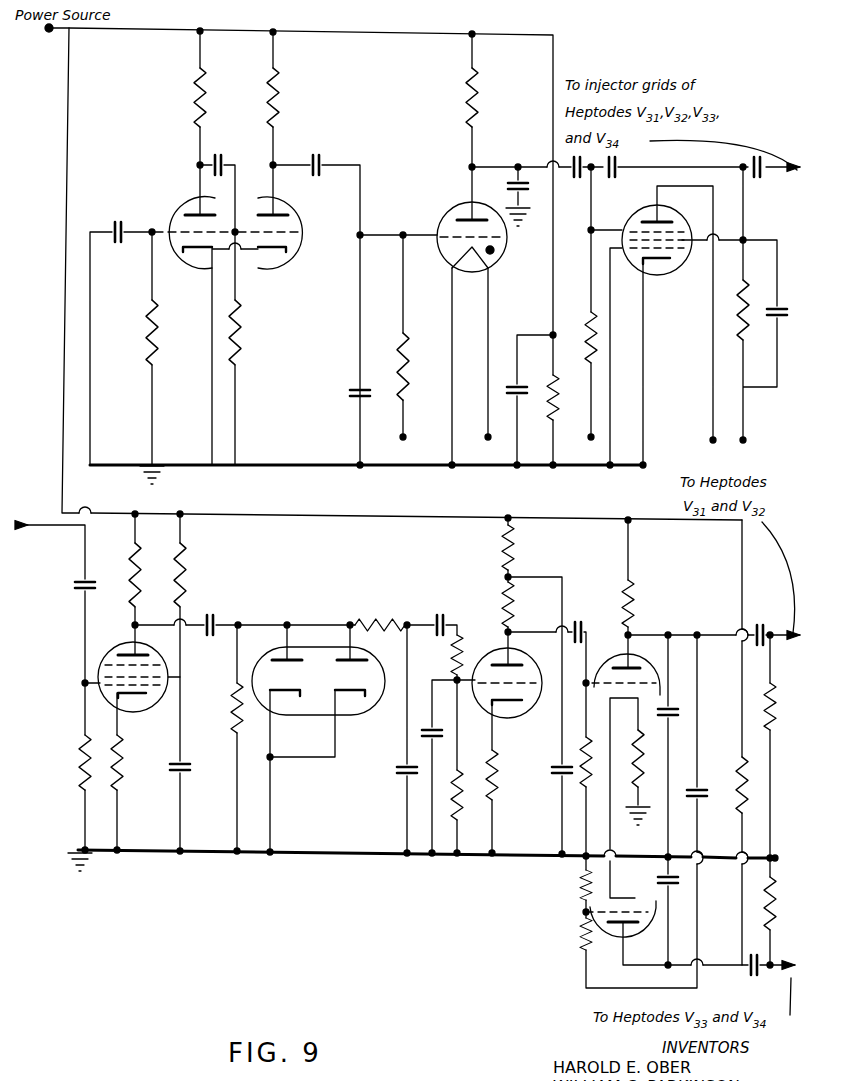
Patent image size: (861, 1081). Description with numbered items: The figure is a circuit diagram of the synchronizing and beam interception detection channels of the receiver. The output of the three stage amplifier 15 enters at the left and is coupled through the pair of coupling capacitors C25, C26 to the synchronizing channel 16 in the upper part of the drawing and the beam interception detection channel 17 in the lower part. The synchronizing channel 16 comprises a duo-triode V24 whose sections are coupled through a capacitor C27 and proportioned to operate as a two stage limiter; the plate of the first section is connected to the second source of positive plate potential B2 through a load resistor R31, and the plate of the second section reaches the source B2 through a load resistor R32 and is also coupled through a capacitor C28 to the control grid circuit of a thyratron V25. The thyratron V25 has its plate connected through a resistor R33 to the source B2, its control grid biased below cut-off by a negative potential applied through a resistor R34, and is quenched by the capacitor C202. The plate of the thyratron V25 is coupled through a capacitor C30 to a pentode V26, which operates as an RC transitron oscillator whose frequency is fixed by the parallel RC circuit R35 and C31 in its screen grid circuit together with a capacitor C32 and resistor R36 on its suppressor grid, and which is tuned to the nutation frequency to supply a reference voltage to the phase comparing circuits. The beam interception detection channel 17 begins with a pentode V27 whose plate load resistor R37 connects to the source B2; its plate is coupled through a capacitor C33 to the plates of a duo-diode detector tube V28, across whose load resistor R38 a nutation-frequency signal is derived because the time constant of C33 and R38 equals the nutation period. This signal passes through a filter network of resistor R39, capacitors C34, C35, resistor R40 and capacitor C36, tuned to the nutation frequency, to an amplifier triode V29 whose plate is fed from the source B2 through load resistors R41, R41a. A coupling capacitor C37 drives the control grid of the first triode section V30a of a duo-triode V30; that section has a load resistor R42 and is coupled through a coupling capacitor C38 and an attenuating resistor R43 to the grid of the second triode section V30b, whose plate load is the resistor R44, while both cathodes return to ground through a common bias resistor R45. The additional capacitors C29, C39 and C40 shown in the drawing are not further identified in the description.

The second source of positive plate potential B2 is at (48, 38).
The three stage amplifier 15 is at (38, 562).
The synchronizing channel 16 is at (183, 168).
The beam interception detection channel 17 is at (225, 857).
The load resistor R31 is at (212, 97).
The load resistor R32 is at (286, 97).
The resistor R33 is at (485, 97).
The resistor R34 is at (416, 367).
The resistor of parallel RC circuit R35 is at (754, 323).
The resistor R36 is at (576, 329).
The plate load resistor R37 is at (146, 574).
The load resistor R38 is at (248, 717).
The resistor R39 is at (380, 613).
The resistor R40 is at (441, 655).
The load resistor R41 is at (522, 604).
The load resistor R41a is at (525, 547).
The load resistor R42 is at (642, 603).
The attenuating resistor R43 is at (570, 938).
The load resistor R44 is at (754, 788).
The bias resistor R45 is at (647, 777).
The coupling capacitor C25 is at (113, 245).
The coupling capacitor C26 is at (95, 601).
The capacitor C27 is at (228, 156).
The capacitor C28 is at (325, 156).
The capacitor C29 is at (369, 404).
The capacitor C30 is at (568, 178).
The capacitor of parallel RC circuit C31 is at (784, 325).
The capacitor C32 is at (613, 178).
The capacitor C33 is at (208, 641).
The capacitor C34 is at (389, 777).
The capacitor C35 is at (450, 614).
The capacitor C36 is at (426, 714).
The coupling capacitor C37 is at (590, 625).
The coupling capacitor C38 is at (706, 807).
The capacitor C39 is at (758, 625).
The capacitor C40 is at (748, 975).
The capacitor C202 is at (503, 198).
The duo-triode V24 is at (245, 239).
The thyratron V25 is at (479, 247).
The pentode V26 is at (658, 252).
The pentode V27 is at (133, 694).
The duo-diode detector tube V28 is at (318, 698).
The amplifier triode V29 is at (509, 698).
The duo-triode V30 is at (624, 720).
The first triode section V30a is at (626, 666).
The second triode section V30b is at (621, 941).